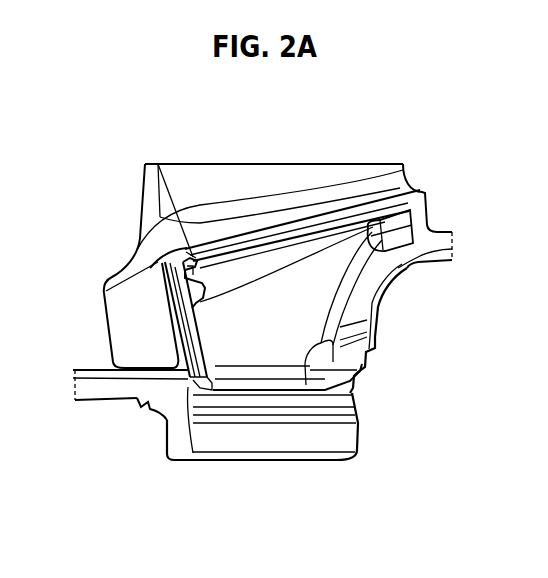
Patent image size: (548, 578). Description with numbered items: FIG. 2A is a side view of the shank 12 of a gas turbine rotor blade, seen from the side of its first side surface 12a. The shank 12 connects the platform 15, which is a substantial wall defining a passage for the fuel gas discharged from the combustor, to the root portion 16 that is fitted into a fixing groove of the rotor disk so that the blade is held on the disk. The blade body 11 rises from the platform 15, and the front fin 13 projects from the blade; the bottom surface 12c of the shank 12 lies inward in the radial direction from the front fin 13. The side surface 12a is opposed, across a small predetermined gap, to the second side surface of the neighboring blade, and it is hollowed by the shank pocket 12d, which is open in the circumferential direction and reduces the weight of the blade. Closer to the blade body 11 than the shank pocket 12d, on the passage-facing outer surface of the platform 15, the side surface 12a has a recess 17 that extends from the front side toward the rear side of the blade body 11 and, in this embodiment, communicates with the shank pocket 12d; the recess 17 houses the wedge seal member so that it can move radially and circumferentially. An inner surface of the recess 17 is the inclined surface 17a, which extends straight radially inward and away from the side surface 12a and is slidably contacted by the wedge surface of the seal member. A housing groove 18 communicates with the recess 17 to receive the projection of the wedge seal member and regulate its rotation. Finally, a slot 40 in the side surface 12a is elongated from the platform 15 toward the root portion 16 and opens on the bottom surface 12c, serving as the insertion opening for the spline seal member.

The blade body 11 is at (233, 173).
The shank 12 is at (383, 302).
The side surface (first side surface) 12a is at (423, 190).
The bottom surface 12c is at (207, 388).
The shank pocket 12d is at (287, 357).
The front fin 13 is at (102, 367).
The platform 15 is at (302, 218).
The root portion 16 is at (348, 438).
The recess 17 is at (162, 256).
The inclined surface 17a is at (191, 254).
The housing groove 18 is at (418, 232).
The slot (first slot) 40 is at (147, 404).